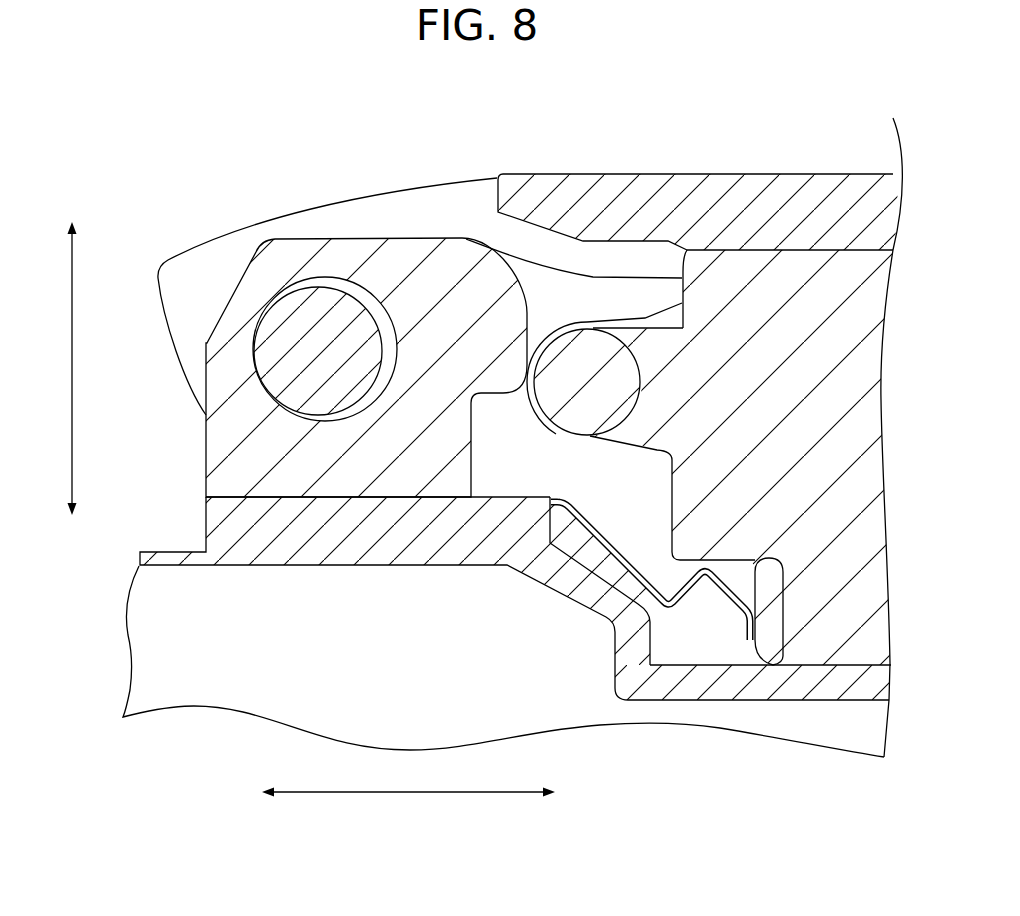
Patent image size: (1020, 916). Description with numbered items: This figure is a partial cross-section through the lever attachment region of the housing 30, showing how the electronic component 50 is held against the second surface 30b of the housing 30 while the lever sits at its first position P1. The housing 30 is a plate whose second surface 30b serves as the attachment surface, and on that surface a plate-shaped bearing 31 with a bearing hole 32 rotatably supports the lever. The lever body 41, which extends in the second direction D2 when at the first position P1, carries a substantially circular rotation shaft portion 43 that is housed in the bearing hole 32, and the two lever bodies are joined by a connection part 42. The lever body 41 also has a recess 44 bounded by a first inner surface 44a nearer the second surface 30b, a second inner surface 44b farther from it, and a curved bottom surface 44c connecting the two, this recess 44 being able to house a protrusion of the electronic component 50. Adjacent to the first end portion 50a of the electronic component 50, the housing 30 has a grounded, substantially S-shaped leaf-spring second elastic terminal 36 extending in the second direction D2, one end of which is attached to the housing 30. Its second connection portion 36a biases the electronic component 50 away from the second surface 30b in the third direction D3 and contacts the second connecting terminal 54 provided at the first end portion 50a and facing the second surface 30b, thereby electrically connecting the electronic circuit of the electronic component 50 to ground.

The housing 30 is at (297, 532).
The second surface 30b is at (398, 488).
The bearing 31 is at (245, 432).
The bearing hole 32 is at (243, 396).
The second elastic terminal 36 is at (669, 618).
The second connection portion 36a is at (707, 575).
The lever body 41 is at (538, 287).
The connection part 42 is at (767, 208).
The rotation shaft portion 43 is at (317, 325).
The recess 44 is at (592, 322).
The first inner surface 44a is at (609, 314).
The second inner surface 44b is at (590, 445).
The curved bottom surface 44c is at (520, 396).
The electronic component 50 is at (808, 317).
The first end portion 50a is at (695, 302).
The second connecting terminal 54 is at (782, 562).
The first position P1 is at (331, 158).
The second direction D2 is at (408, 808).
The third direction D3 is at (52, 368).